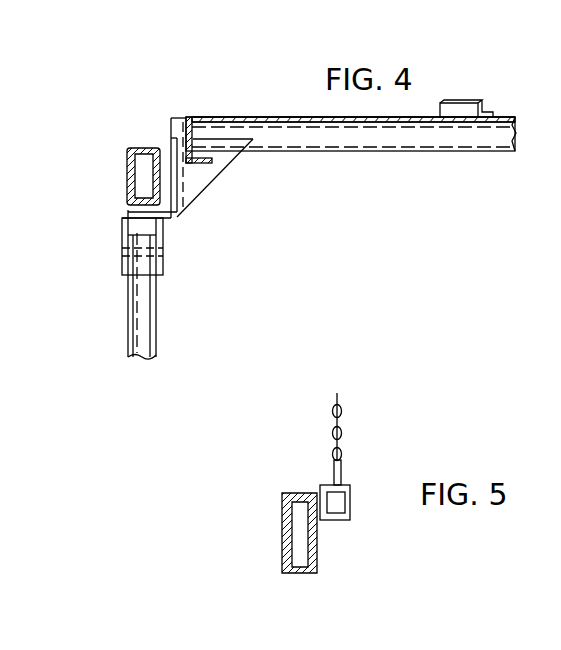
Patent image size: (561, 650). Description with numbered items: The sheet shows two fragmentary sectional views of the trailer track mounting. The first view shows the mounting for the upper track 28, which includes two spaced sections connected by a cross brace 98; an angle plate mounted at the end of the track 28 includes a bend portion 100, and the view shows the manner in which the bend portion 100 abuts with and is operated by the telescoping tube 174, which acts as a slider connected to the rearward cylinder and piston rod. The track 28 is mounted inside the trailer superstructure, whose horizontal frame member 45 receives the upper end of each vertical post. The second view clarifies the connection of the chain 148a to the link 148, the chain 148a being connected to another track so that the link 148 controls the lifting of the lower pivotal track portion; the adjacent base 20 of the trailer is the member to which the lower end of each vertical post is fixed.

In FIG. 4, the upper track 28 is at (278, 116).
In FIG. 4, the cross brace 98 is at (418, 132).
In FIG. 4, the bend portion 100 is at (180, 222).
In FIG. 4, the frame member 45 is at (127, 178).
In FIG. 4, the telescoping tube 174 is at (158, 326).
In FIG. 5, the base 20 is at (283, 535).
In FIG. 5, the link 148 is at (350, 508).
In FIG. 5, the chain 148a is at (342, 412).